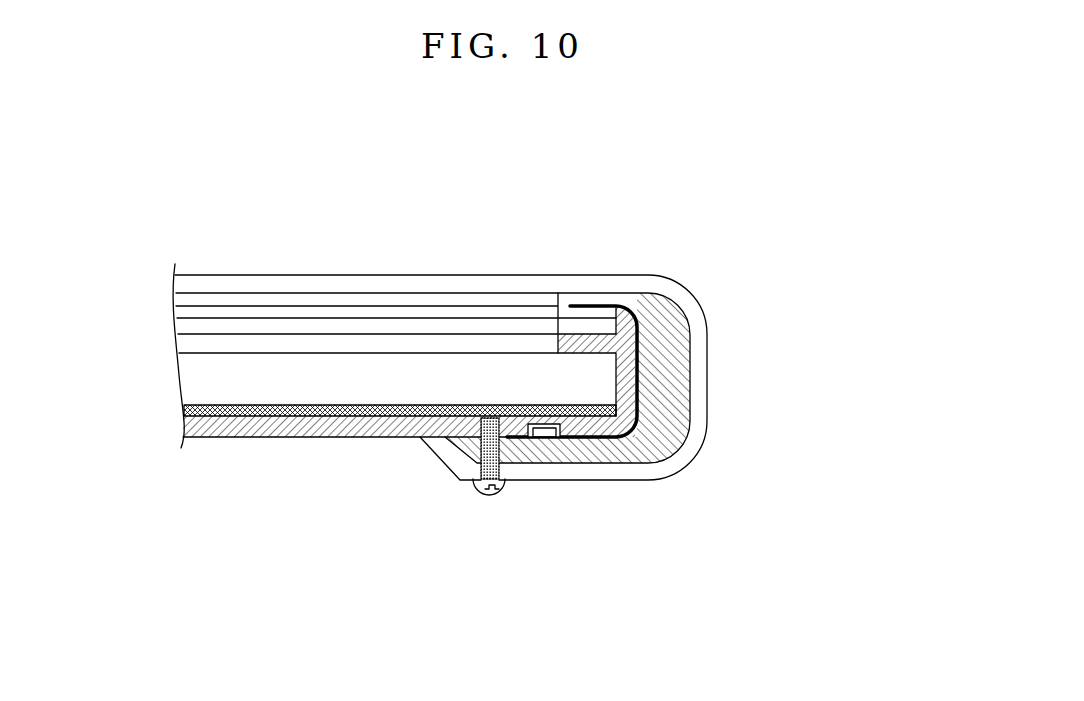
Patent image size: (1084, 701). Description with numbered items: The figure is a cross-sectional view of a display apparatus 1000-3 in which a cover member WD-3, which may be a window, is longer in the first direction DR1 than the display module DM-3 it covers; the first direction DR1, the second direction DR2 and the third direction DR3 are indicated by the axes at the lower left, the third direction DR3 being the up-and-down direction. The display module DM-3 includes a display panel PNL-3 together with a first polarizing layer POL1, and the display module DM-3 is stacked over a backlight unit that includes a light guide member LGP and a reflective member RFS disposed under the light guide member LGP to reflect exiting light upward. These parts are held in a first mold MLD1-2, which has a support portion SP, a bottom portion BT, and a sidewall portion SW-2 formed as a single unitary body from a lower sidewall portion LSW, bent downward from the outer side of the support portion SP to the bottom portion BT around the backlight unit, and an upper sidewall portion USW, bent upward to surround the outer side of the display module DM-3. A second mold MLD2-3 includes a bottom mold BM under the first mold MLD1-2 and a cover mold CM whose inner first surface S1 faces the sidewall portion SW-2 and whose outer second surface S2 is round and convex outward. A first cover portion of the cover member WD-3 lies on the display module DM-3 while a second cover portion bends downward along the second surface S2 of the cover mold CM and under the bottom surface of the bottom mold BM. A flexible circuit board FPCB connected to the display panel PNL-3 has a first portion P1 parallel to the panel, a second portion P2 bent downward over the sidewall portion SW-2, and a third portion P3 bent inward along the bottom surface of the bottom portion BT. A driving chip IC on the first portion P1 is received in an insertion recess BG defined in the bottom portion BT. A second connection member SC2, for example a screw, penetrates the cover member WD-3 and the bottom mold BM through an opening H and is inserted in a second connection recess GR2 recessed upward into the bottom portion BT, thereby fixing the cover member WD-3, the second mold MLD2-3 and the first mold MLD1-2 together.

The display apparatus 1000-3 is at (753, 208).
The display module DM-3 is at (272, 205).
The display panel PNL-3 is at (166, 310).
The first polarizing layer POL1 is at (232, 325).
The cover member WD-3 is at (411, 286).
The flexible circuit board FPCB is at (575, 300).
The first portion P1 is at (594, 303).
The first surface S1 is at (633, 296).
The second surface S2 is at (666, 294).
The upper sidewall portion USW is at (640, 306).
The lower sidewall portion LSW is at (645, 373).
The sidewall portion SW-2 is at (775, 302).
The support portion SP is at (585, 345).
The bottom portion BT is at (645, 410).
The second portion P2 is at (663, 427).
The first mold MLD1-2 is at (850, 320).
The light guide member LGP is at (237, 383).
The reflective member RFS is at (300, 407).
The second connection recess GR2 is at (472, 427).
The hole H is at (472, 453).
The second connection member SC2 is at (481, 493).
The insertion recess BG is at (520, 428).
The driving chip IC is at (546, 432).
The bottom mold BM is at (603, 450).
The cover mold CM is at (702, 445).
The third portion P3 is at (572, 453).
The second mold MLD2-3 is at (700, 541).
The first direction DR1 is at (103, 605).
The second direction DR2 is at (98, 600).
The third direction DR3 is at (103, 605).